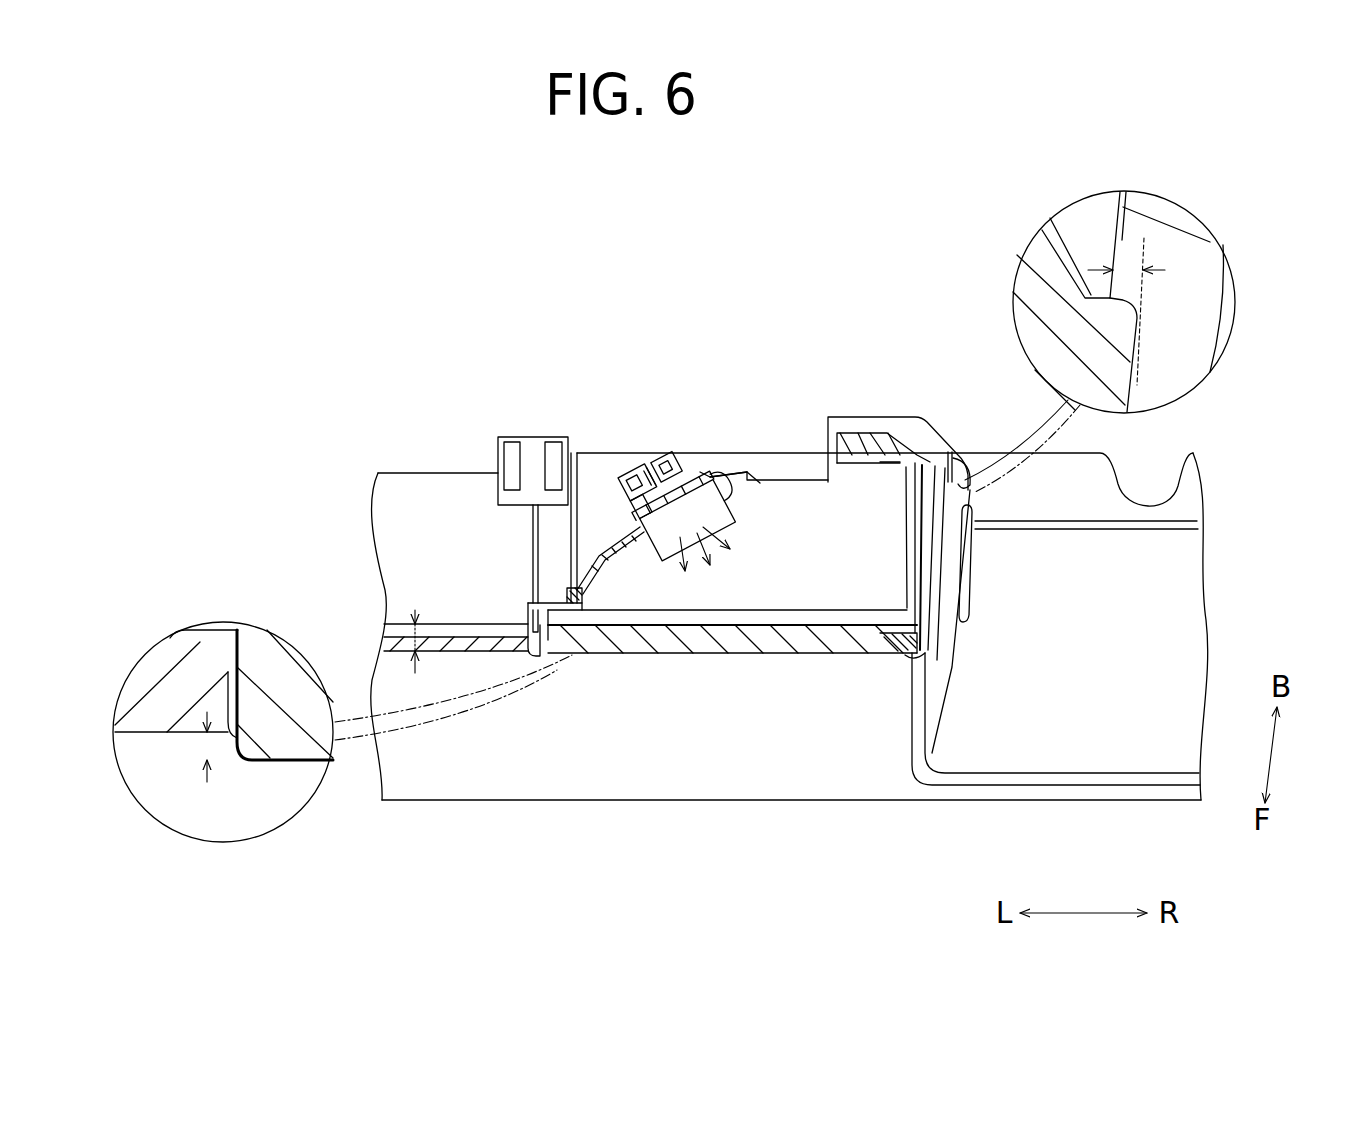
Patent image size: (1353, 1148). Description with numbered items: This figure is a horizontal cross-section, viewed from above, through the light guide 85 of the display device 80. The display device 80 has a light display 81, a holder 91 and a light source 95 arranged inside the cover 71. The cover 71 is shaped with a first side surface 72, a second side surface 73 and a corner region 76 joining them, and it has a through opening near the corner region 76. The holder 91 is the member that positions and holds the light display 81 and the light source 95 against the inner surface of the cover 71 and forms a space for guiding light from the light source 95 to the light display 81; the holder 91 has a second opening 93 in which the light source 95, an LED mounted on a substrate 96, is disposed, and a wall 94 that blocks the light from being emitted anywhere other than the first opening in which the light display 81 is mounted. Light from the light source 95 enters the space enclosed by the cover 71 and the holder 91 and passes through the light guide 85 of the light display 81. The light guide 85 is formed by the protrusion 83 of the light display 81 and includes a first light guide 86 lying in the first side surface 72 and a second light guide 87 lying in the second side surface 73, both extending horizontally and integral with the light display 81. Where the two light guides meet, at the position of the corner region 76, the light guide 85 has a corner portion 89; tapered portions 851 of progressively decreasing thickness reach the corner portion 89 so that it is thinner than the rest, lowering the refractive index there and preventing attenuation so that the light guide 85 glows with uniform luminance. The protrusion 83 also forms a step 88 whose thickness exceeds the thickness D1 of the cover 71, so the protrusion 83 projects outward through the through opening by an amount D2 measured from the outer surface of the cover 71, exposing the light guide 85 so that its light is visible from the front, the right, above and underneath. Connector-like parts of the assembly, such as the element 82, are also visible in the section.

The cover 71 is at (542, 779).
The first side surface 72 is at (703, 786).
The second side surface 73 is at (951, 633).
The corner region 76 is at (919, 739).
The display device 80 is at (911, 398).
The light display 81 is at (630, 622).
The connector pin 82 is at (523, 647).
The protrusion 83 is at (683, 654).
The light guide 85 is at (873, 616).
The first light guide 86 is at (772, 654).
The second light guide 87 is at (951, 566).
The step 88 is at (228, 672).
The corner portion 89 is at (918, 654).
The holder 91 is at (600, 537).
The second opening 93 is at (730, 477).
The wall 94 is at (794, 487).
The light source 95 is at (695, 473).
The substrate 96 is at (643, 477).
The tapered portions 851 is at (912, 567).
The thickness of the cover D1 is at (384, 623).
The amount of protrusion D2 is at (1100, 341).